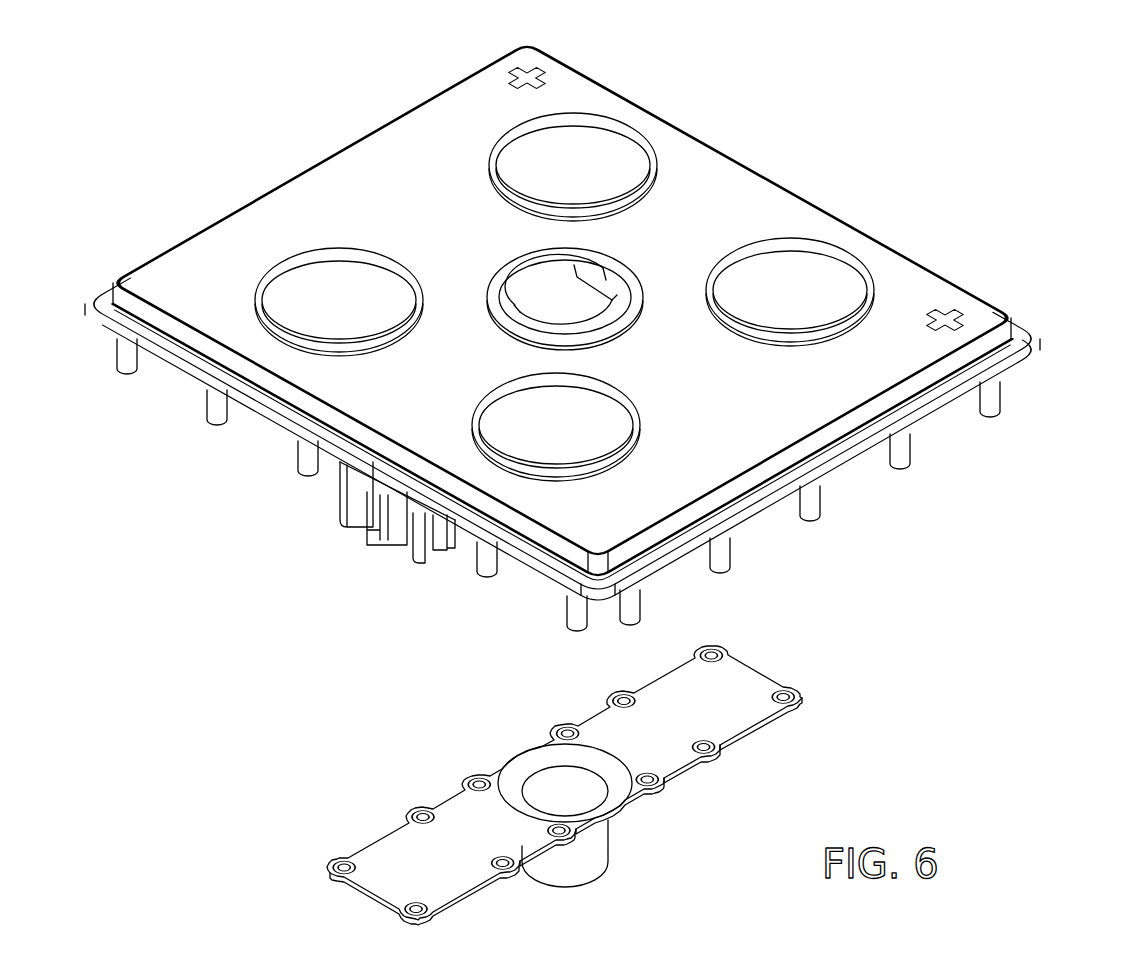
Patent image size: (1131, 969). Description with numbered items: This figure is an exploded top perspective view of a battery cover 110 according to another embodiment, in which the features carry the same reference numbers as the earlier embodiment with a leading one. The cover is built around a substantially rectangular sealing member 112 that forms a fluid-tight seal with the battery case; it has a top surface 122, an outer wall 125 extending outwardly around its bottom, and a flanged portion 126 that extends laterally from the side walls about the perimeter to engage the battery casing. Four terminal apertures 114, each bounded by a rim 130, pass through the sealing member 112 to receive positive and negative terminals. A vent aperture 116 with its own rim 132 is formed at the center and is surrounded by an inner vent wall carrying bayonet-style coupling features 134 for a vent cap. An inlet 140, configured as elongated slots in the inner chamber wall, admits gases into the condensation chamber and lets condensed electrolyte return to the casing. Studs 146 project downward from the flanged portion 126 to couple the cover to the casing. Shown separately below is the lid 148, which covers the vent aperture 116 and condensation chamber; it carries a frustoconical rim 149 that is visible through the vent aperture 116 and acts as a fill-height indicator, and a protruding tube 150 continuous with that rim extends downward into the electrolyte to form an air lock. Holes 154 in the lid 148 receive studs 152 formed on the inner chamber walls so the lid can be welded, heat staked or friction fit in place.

The battery cover 110 is at (921, 130).
The sealing member 112 is at (902, 290).
The terminal apertures 114 is at (285, 278).
The vent aperture 116 is at (510, 278).
The top surface 122 is at (718, 205).
The outer wall 125 is at (700, 523).
The flanged portion 126 is at (665, 572).
The rim 130 is at (618, 120).
The rim 132 is at (630, 282).
The coupling feature 134 is at (597, 300).
The inlet 140 is at (380, 518).
The studs 146 is at (1000, 405).
The lid 148 is at (727, 690).
The frustoconical rim 149 is at (604, 766).
The protruding tube 150 is at (600, 843).
The studs 152 is at (417, 543).
The holes 154 is at (349, 860).